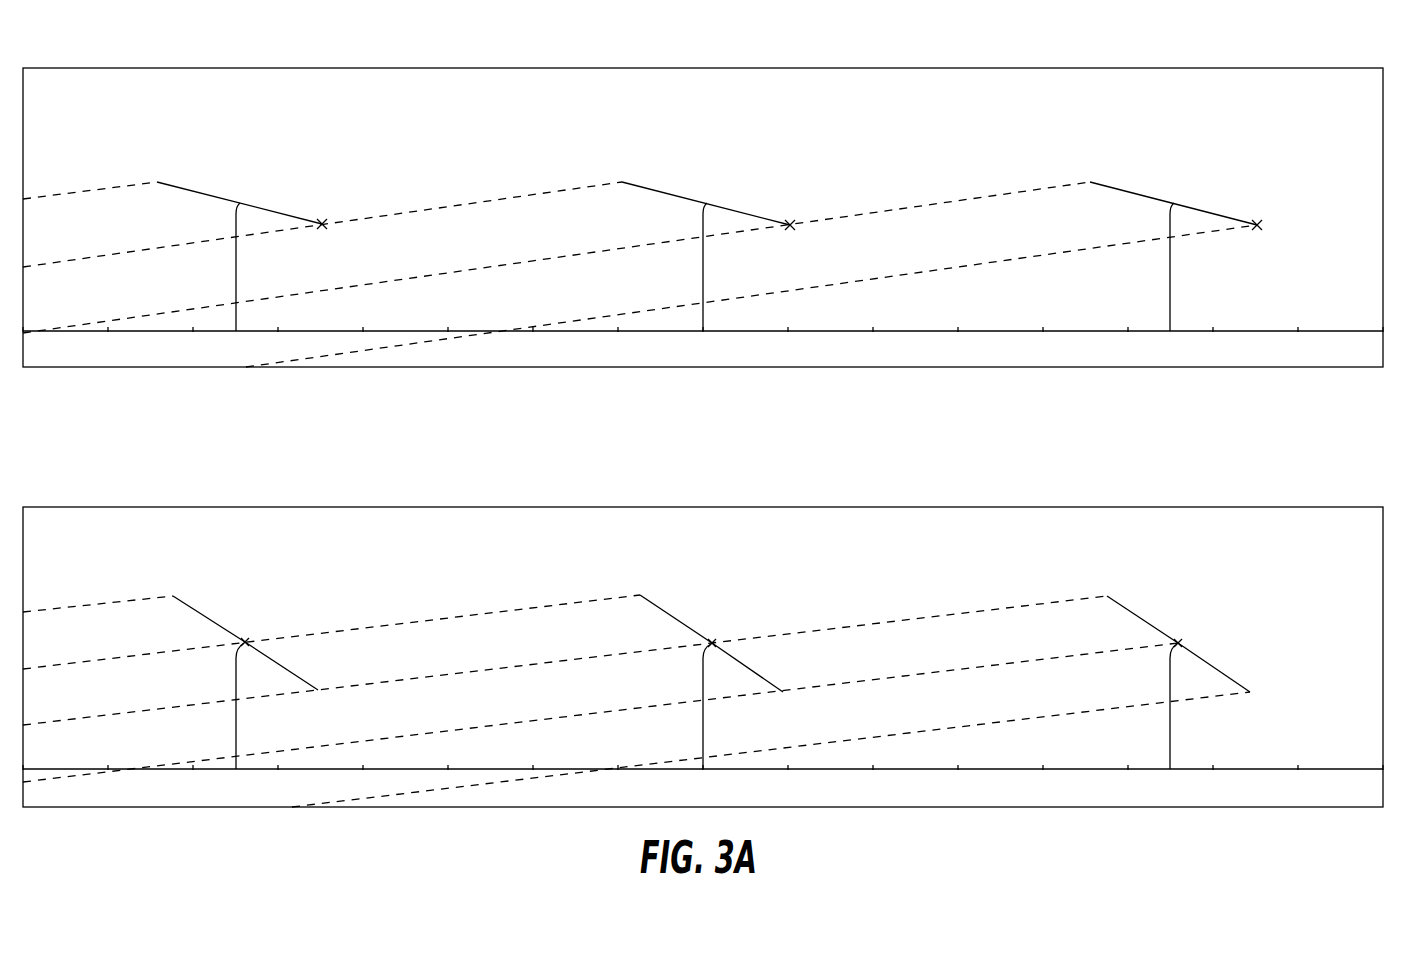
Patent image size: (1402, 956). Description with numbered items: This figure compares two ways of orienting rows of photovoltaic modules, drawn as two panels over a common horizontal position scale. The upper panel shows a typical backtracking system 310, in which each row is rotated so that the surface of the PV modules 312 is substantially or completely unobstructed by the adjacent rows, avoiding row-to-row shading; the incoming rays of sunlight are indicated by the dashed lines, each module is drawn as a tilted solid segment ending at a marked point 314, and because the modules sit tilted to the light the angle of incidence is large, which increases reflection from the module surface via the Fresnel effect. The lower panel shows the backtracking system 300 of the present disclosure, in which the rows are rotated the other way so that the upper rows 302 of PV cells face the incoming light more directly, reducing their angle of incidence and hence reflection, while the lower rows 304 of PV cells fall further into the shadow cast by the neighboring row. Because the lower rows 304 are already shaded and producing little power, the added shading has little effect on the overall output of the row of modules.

The backtracking system 300 is at (701, 625).
The upper rows of PV cells 302 is at (221, 624).
The lower rows of PV cells 304 is at (287, 667).
The typical backtracking system 310 is at (701, 186).
The PV modules 312 is at (255, 206).
The endpoint marker 314 is at (322, 218).